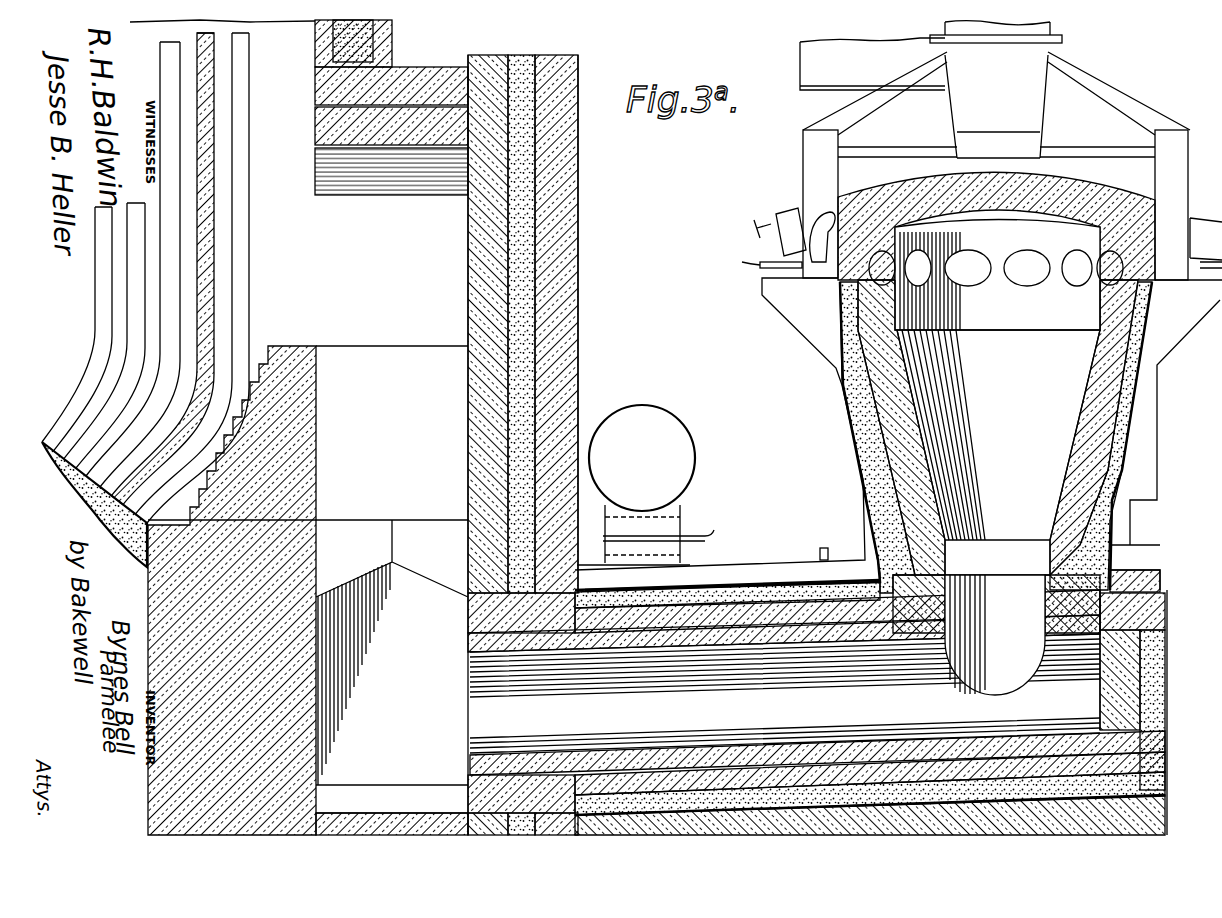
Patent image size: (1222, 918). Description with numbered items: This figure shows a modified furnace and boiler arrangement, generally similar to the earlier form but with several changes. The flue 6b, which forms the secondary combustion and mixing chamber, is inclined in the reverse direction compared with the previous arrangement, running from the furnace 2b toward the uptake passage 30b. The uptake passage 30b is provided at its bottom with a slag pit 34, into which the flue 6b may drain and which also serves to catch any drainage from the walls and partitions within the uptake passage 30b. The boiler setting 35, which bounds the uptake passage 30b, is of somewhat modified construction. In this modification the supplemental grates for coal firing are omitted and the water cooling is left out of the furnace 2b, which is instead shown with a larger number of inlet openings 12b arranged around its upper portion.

The boiler setting 35 is at (548, 315).
The uptake passage 30b is at (392, 565).
The slag pit 34 is at (392, 810).
The inlet openings 12b is at (1040, 300).
The furnace shaft lining 2b is at (1112, 388).
The flue 6b is at (816, 707).